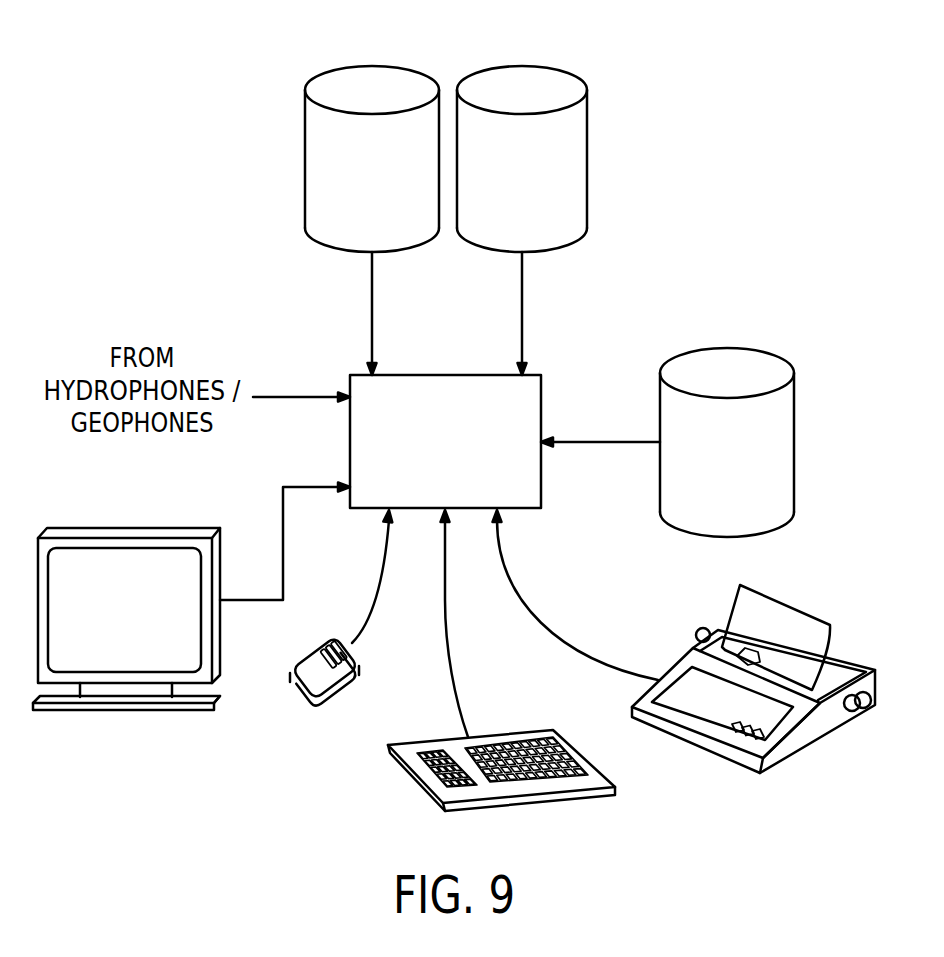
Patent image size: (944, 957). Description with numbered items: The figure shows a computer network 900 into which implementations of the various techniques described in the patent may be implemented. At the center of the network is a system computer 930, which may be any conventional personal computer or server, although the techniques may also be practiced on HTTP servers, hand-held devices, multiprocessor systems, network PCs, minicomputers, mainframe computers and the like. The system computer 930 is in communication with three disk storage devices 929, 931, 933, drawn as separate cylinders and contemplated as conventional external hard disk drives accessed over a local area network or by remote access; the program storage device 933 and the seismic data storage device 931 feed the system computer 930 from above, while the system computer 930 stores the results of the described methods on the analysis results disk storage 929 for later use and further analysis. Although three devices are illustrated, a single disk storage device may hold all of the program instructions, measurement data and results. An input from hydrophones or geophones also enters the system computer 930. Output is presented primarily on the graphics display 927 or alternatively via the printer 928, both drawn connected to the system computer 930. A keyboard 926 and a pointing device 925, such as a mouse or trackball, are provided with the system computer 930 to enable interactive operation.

The computer network 900 is at (152, 139).
The pointing device 925 is at (340, 690).
The keyboard 926 is at (420, 788).
The graphics display 927 is at (133, 528).
The printer 928 is at (808, 745).
The disk storage device 929 is at (727, 348).
The system computer 930 is at (446, 375).
The disk storage device 931 is at (523, 63).
The disk storage device 933 is at (372, 63).